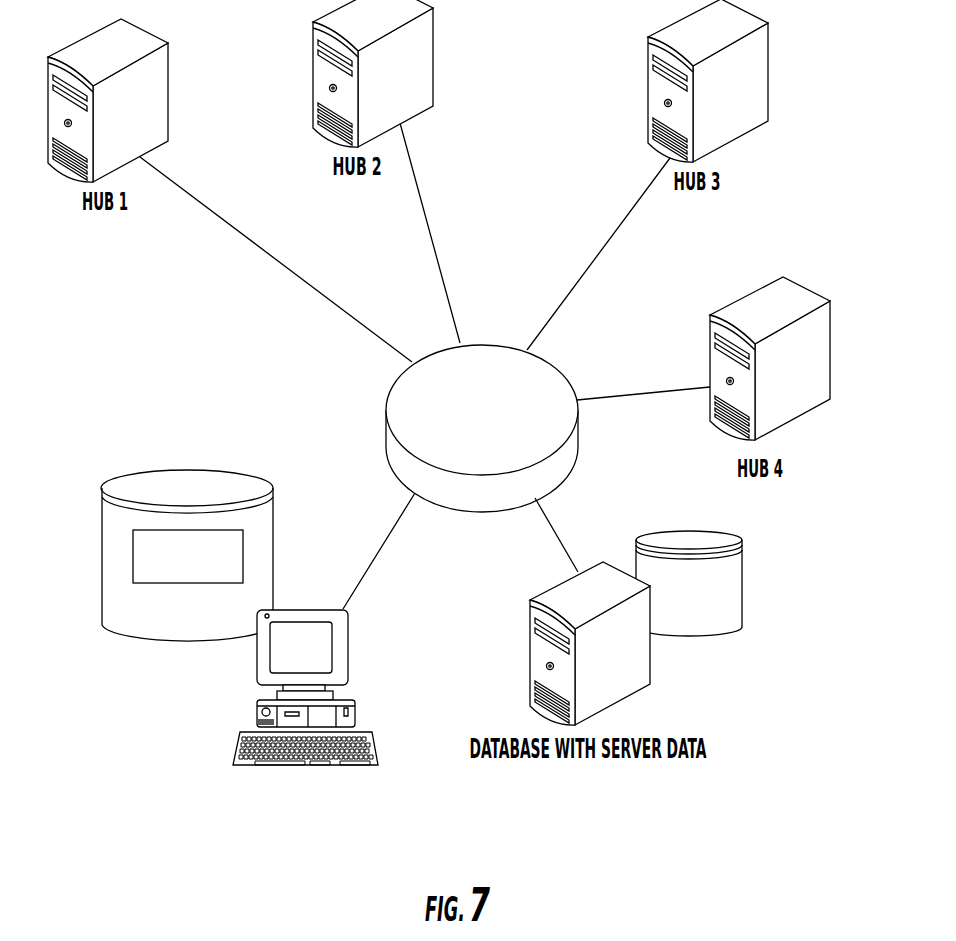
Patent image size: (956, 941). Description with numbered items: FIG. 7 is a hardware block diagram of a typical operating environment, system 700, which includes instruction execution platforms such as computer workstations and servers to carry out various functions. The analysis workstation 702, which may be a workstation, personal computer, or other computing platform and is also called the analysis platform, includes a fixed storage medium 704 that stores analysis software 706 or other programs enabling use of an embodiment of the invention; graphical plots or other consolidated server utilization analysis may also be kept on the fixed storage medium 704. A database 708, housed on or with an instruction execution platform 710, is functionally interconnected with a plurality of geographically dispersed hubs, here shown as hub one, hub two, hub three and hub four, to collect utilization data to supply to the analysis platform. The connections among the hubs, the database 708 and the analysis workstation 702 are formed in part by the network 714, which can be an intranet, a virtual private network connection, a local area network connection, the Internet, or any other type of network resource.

The system 700 is at (765, 789).
The analysis workstation 702 is at (348, 655).
The fixed storage medium 704 is at (187, 532).
The analysis software 706 is at (172, 571).
The database 708 is at (742, 570).
The instruction execution platform 710 is at (638, 660).
The network 714 is at (550, 360).